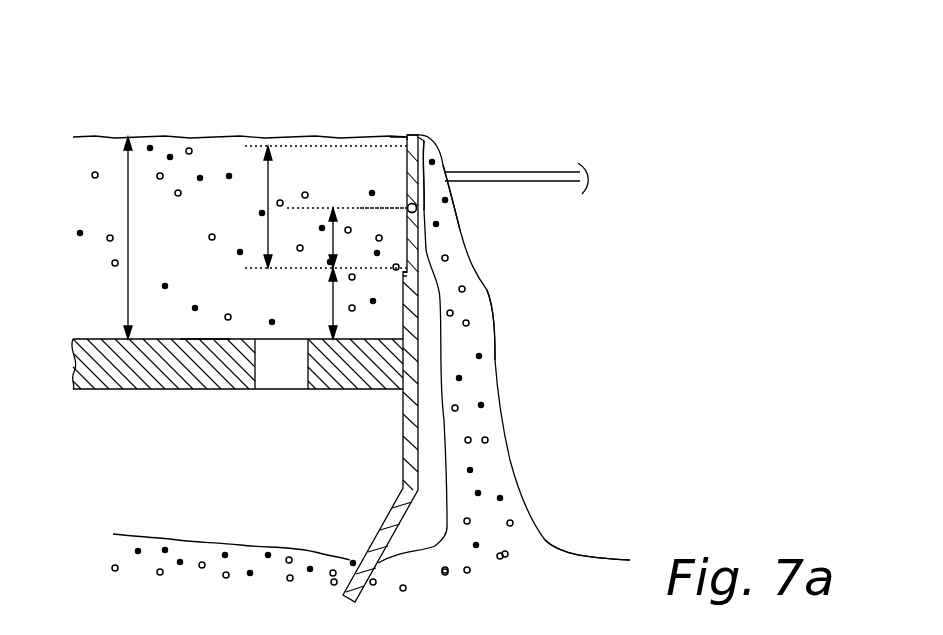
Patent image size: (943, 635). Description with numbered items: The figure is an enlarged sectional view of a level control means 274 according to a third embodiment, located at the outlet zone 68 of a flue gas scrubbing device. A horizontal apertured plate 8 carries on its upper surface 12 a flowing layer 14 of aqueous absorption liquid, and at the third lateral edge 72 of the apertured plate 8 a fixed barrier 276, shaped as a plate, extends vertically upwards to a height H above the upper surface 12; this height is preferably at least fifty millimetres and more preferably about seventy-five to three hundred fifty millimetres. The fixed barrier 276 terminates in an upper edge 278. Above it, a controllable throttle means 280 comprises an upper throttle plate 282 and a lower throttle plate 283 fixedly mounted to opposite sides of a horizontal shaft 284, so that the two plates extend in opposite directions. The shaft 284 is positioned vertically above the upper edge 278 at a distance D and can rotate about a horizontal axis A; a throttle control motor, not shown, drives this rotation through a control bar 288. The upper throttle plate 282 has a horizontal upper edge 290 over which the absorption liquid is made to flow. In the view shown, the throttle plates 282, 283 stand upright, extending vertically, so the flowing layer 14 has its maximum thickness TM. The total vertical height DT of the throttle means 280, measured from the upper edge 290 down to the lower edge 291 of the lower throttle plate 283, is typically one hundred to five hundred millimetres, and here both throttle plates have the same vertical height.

The apertured plate 8 is at (177, 375).
The upper surface 12 is at (204, 340).
The flowing layer 14 is at (164, 150).
The outlet zone 68 is at (540, 385).
The third lateral edge 72 is at (420, 363).
The level control means 274 is at (633, 267).
The fixed barrier 276 is at (418, 308).
The upper edge 278 is at (418, 235).
The controllable throttle means 280 is at (403, 127).
The upper throttle plate 282 is at (409, 206).
The lower throttle plate 283 is at (415, 242).
The horizontal shaft 284 is at (408, 206).
The control bar 288 is at (508, 177).
The horizontal upper edge 290 is at (410, 134).
The lower edge 291 is at (418, 278).
The horizontal axis A is at (407, 205).
The maximum thickness TM is at (151, 238).
The total vertical height DT is at (309, 207).
The distance D is at (347, 238).
The height H is at (318, 303).